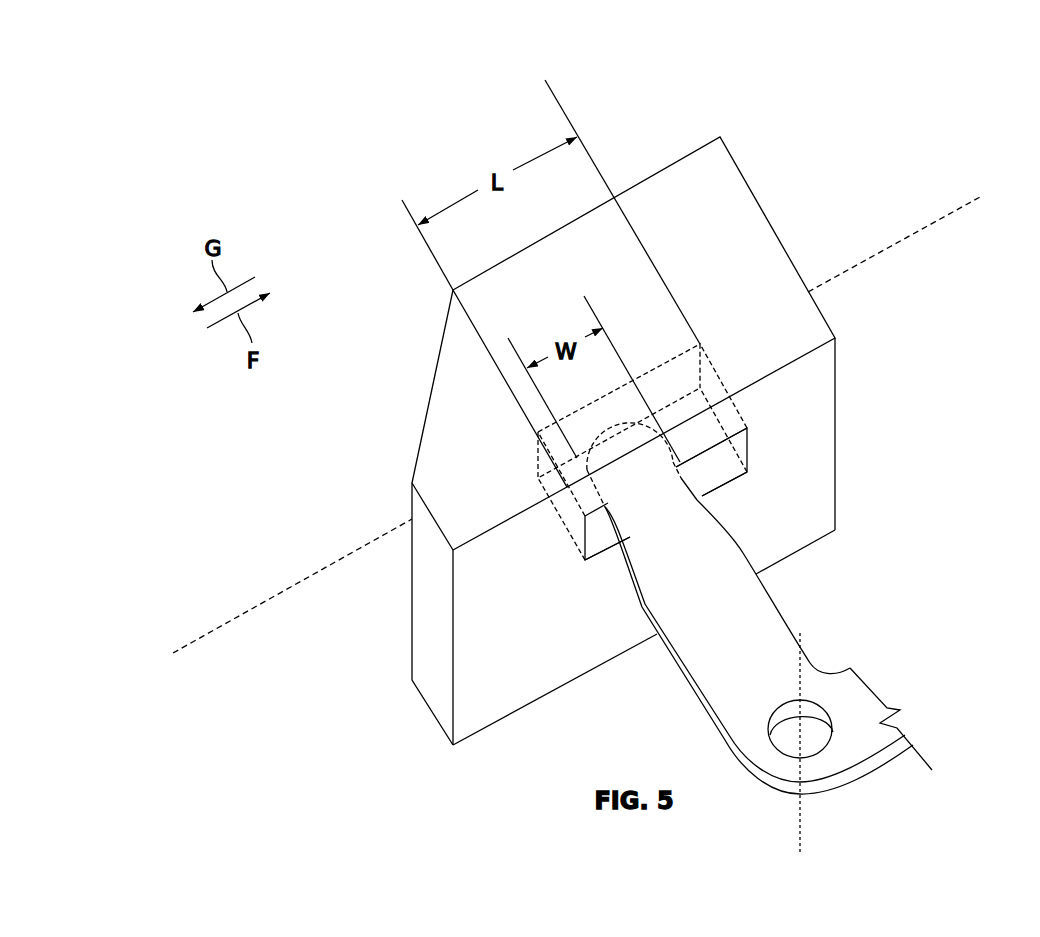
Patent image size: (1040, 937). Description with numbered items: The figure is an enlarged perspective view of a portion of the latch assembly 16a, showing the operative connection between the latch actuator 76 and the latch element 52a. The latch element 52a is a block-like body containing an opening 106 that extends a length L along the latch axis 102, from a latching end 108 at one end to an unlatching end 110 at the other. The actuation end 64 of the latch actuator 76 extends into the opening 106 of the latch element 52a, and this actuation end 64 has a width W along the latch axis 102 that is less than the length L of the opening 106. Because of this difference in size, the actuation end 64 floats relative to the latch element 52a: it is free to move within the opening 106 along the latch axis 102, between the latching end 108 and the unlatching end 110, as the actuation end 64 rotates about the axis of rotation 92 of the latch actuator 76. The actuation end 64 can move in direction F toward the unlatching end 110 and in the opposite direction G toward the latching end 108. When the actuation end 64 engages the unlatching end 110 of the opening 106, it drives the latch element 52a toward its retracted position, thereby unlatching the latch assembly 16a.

The latch assembly 16a is at (857, 175).
The latch element 52a is at (679, 157).
The actuation end 64 is at (644, 449).
The latch actuator 76 is at (755, 717).
The axis of rotation 92 is at (800, 817).
The latch axis 102 is at (258, 605).
The opening 106 is at (730, 445).
The latching end 108 is at (588, 543).
The unlatching end 110 is at (735, 470).